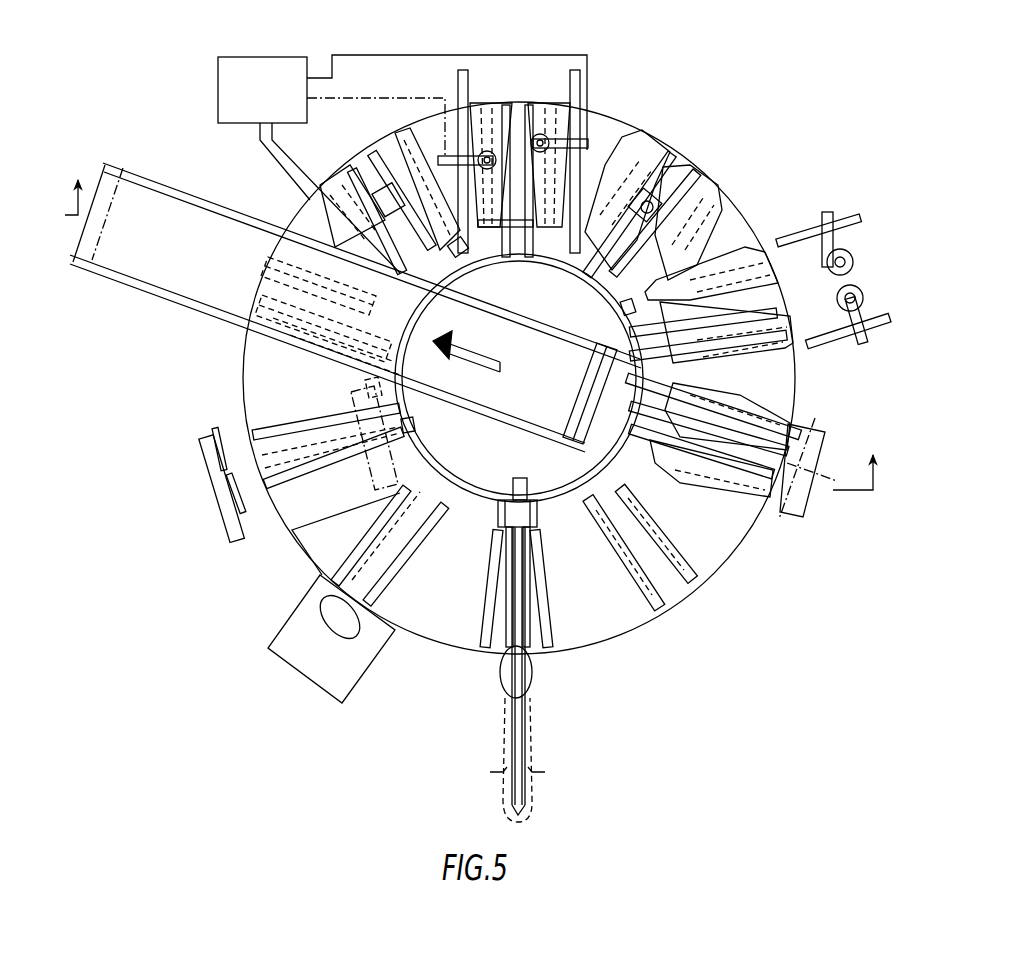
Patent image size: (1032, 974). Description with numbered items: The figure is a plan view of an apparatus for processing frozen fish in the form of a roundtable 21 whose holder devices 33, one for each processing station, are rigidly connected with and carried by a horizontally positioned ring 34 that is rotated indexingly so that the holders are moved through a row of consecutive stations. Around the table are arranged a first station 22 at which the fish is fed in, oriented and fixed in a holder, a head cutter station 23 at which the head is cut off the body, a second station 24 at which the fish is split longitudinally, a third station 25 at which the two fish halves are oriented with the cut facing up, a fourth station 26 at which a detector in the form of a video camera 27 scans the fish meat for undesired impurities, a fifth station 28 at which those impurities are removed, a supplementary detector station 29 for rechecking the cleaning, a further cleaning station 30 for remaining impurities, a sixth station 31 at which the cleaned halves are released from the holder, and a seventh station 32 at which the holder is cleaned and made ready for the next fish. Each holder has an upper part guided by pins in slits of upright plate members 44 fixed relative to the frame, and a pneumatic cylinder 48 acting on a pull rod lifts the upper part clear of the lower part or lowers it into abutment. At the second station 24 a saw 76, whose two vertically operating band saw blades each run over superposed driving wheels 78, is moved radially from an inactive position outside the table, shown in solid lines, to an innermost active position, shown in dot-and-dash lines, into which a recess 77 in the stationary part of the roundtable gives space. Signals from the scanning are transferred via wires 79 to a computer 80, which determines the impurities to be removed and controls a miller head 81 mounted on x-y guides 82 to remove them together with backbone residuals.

The roundtable 21 is at (699, 697).
The first station 22 is at (540, 692).
The head cutter station 23 is at (298, 686).
The second station 24 is at (266, 472).
The third station 25 is at (245, 279).
The fourth station 26 is at (353, 157).
The video camera 27 is at (390, 150).
The fifth station 28 is at (497, 55).
The supplementary detector station 29 is at (684, 150).
The further cleaning station 30 is at (853, 273).
The sixth station 31 is at (808, 502).
The seventh station 32 is at (685, 605).
The holder device 33 is at (457, 273).
The ring 34 is at (400, 390).
The upright plate member 44 is at (500, 522).
The pneumatic cylinder 48 is at (533, 516).
The saw 76 is at (223, 517).
The recess 77 is at (303, 510).
The driving wheels 78 is at (217, 430).
The wires 79 is at (270, 160).
The computer 80 is at (243, 63).
The miller head 81 is at (538, 108).
The x-y guides 82 is at (580, 99).